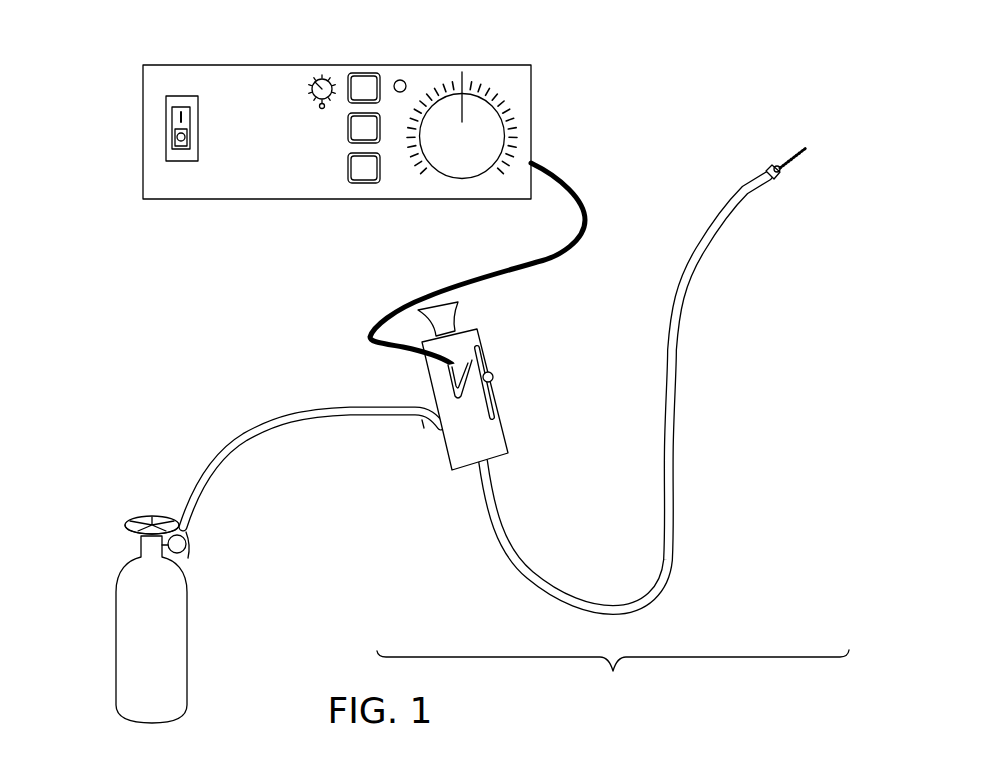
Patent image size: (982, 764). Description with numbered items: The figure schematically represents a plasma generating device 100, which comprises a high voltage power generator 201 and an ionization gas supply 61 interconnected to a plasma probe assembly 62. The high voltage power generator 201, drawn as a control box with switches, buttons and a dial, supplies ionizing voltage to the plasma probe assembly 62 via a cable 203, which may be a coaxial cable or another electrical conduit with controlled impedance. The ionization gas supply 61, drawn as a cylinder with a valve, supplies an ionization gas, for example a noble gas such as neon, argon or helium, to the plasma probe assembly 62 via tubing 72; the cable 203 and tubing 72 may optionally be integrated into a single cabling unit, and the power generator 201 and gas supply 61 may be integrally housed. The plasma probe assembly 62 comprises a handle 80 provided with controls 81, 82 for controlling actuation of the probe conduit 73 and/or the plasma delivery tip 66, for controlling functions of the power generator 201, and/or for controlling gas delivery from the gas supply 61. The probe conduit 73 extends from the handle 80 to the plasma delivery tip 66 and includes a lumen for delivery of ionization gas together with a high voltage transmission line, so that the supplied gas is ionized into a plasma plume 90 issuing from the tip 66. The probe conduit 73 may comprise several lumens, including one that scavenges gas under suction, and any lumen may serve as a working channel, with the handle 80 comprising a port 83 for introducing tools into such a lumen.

The plasma generating device 100 is at (578, 114).
The high voltage power generator 201 is at (227, 64).
The cable 203 is at (536, 259).
The ionization gas supply 61 is at (125, 565).
The plasma probe assembly 62 is at (613, 671).
The plasma delivery tip 66 is at (767, 173).
The tubing 72 is at (270, 422).
The probe conduit 73 is at (672, 318).
The handle 80 is at (432, 398).
The control 81 is at (457, 323).
The control 82 is at (495, 377).
The port 83 is at (465, 360).
The plasma plume 90 is at (793, 150).